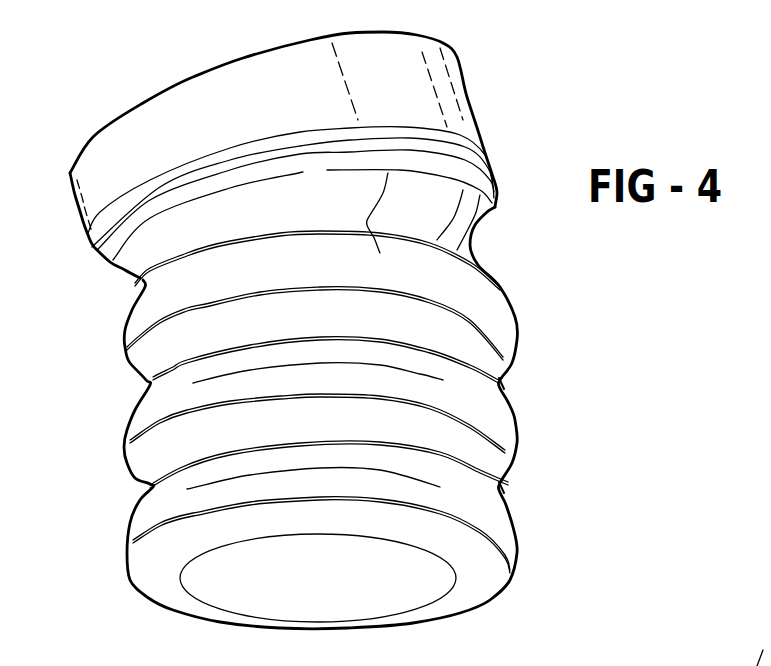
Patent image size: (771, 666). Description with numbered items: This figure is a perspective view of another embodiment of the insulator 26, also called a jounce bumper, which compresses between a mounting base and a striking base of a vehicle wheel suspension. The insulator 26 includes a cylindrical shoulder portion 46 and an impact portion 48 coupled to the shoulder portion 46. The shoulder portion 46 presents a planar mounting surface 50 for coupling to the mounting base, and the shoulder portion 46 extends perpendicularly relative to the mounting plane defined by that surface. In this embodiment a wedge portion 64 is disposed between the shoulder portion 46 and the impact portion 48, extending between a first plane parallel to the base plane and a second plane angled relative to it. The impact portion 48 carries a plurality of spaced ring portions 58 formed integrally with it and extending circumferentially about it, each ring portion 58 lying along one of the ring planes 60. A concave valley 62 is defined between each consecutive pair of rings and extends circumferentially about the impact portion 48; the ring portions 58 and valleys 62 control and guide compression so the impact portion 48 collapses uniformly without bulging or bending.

The mounting surface 50 is at (234, 63).
The shoulder portion 46 is at (438, 67).
The wedge portion 64 is at (466, 129).
The insulator 26 is at (500, 317).
The valley 62 is at (499, 383).
The impact portion 48 is at (504, 437).
The ring portions 58 is at (123, 337).
The ring planes 60 is at (210, 665).